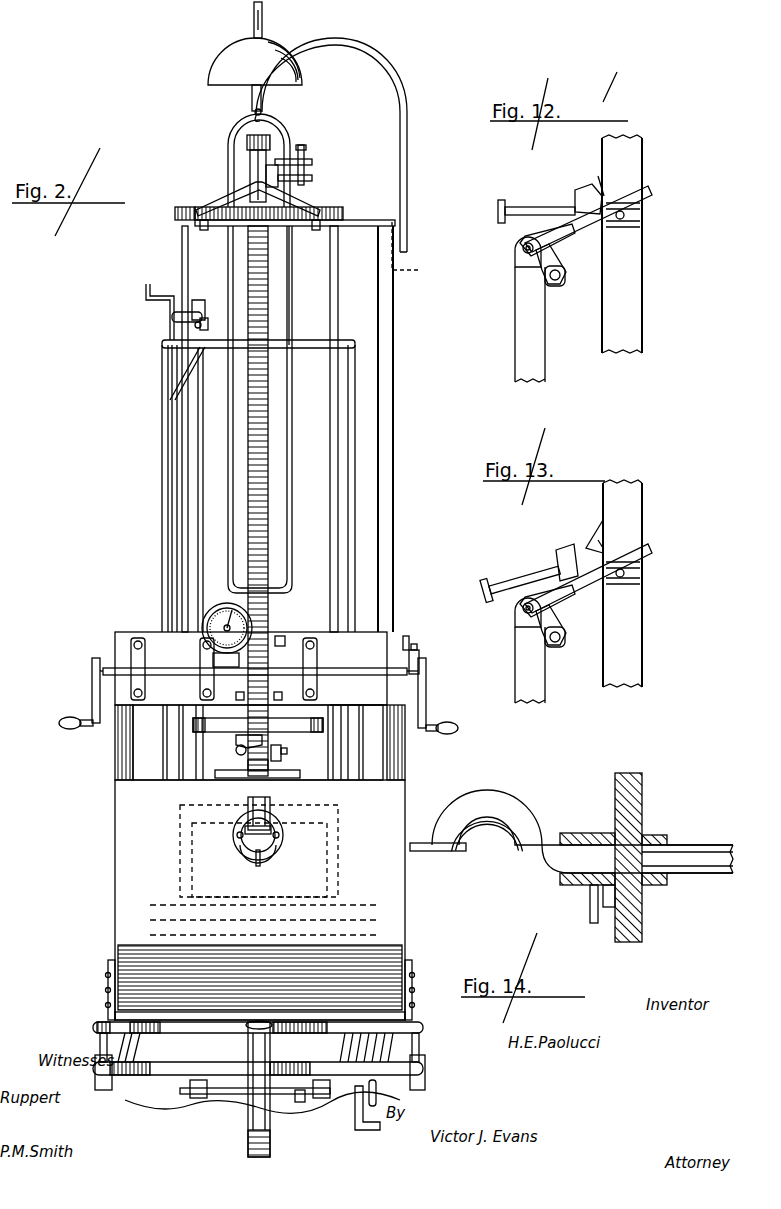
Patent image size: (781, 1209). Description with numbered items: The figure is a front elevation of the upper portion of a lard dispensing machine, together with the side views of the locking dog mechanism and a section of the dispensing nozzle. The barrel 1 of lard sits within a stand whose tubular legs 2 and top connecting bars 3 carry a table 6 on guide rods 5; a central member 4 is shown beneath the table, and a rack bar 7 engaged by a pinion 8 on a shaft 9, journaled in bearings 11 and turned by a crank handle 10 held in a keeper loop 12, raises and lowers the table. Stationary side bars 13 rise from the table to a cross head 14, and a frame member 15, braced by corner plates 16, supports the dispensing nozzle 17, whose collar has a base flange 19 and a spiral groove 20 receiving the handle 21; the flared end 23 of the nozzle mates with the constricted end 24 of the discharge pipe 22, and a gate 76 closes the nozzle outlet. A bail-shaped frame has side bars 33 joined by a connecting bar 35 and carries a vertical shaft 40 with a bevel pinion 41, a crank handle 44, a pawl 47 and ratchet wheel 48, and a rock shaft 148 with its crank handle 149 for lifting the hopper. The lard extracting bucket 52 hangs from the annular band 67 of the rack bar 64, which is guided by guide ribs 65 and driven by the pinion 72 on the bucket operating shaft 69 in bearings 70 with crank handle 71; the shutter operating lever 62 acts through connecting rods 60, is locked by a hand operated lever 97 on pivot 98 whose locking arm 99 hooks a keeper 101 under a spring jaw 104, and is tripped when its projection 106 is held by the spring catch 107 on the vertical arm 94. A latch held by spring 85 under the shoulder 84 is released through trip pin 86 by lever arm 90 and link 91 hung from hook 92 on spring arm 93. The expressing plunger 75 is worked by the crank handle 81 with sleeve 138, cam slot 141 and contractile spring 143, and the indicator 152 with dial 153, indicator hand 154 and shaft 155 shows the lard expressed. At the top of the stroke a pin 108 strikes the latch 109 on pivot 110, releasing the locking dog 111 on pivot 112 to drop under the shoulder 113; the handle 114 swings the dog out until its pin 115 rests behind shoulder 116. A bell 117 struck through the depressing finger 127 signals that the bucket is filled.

In FIG. 2, the barrel 1 is at (140, 1106).
In FIG. 2, the legs 2 is at (425, 1068).
In FIG. 2, the top connecting bars 3 is at (167, 1065).
In FIG. 2, the central column 4 is at (270, 1115).
In FIG. 2, the guide rods 5 is at (100, 1042).
In FIG. 2, the table 6 is at (128, 1016).
In FIG. 2, the rack bar 7 is at (248, 1150).
In FIG. 2, the pinion 8 is at (240, 1096).
In FIG. 2, the shaft 9 is at (300, 1102).
In FIG. 2, the crank handle 10 is at (356, 1112).
In FIG. 14, the crank handle 10 is at (568, 881).
In FIG. 2, the bearings 11 is at (320, 1080).
In FIG. 2, the keeper loop 12 is at (372, 1108).
In FIG. 2, the side bars 13 is at (117, 762).
In FIG. 2, the cross head 14 is at (350, 686).
In FIG. 2, the frame member 15 is at (120, 860).
In FIG. 12, the frame member 15 is at (515, 342).
In FIG. 13, the frame member 15 is at (535, 685).
In FIG. 14, the frame member 15 is at (633, 894).
In FIG. 2, the corner plates 16 is at (412, 976).
In FIG. 2, the dispensing nozzle 17 is at (264, 806).
In FIG. 14, the dispensing nozzle 17 is at (491, 790).
In FIG. 2, the base flange 19 is at (240, 850).
In FIG. 14, the base flange 19 is at (622, 902).
In FIG. 14, the spiral groove 20 is at (570, 833).
In FIG. 2, the handle 21 is at (260, 862).
In FIG. 14, the handle 21 is at (590, 915).
In FIG. 14, the discharge pipe 22 is at (715, 845).
In FIG. 14, the flared end 23 is at (672, 838).
In FIG. 14, the constricted end 24 is at (690, 864).
In FIG. 2, the side bars 33 is at (356, 512).
In FIG. 2, the connecting bar 35 is at (306, 348).
In FIG. 2, the vertical shaft 40 is at (199, 505).
In FIG. 2, the bevel pinion 41 is at (213, 348).
In FIG. 2, the crank handle 44 is at (172, 322).
In FIG. 2, the pawl 47 is at (196, 300).
In FIG. 2, the ratchet wheel 48 is at (206, 318).
In FIG. 2, the lard extracting bucket 52 is at (190, 857).
In FIG. 2, the connecting rods 60 is at (330, 487).
In FIG. 2, the shutter operating lever 62 is at (222, 215).
In FIG. 2, the rack bar 64 is at (270, 432).
In FIG. 12, the rack bar 64 is at (636, 289).
In FIG. 13, the rack bar 64 is at (636, 648).
In FIG. 2, the guide ribs 65 is at (283, 632).
In FIG. 2, the annular band 67 is at (340, 820).
In FIG. 2, the bucket operating shaft 69 is at (173, 668).
In FIG. 2, the bearings 70 is at (318, 666).
In FIG. 2, the crank handle 71 is at (92, 688).
In FIG. 2, the pinion 72 is at (236, 682).
In FIG. 2, the expressing plunger 75 is at (325, 723).
In FIG. 2, the gate 76 is at (244, 824).
In FIG. 14, the gate 76 is at (442, 851).
In FIG. 2, the crank handle 81 is at (427, 700).
In FIG. 2, the shoulder 84 is at (247, 140).
In FIG. 2, the spring 85 is at (204, 200).
In FIG. 2, the trip pin 86 is at (258, 178).
In FIG. 2, the lever arm 90 is at (292, 134).
In FIG. 2, the link 91 is at (291, 285).
In FIG. 2, the hook 92 is at (266, 110).
In FIG. 2, the spring arm 93 is at (397, 60).
In FIG. 2, the vertical arm 94 is at (395, 410).
In FIG. 2, the hand operated lever 97 is at (215, 192).
In FIG. 2, the pivot 98 is at (180, 218).
In FIG. 2, the locking arm 99 is at (305, 154).
In FIG. 2, the keeper 101 is at (313, 179).
In FIG. 2, the spring jaw 104 is at (313, 162).
In FIG. 2, the projection 106 is at (372, 220).
In FIG. 2, the spring catch 107 is at (410, 268).
In FIG. 2, the pin 108 is at (288, 750).
In FIG. 12, the pin 108 is at (626, 218).
In FIG. 13, the pin 108 is at (625, 573).
In FIG. 2, the latch 109 is at (282, 752).
In FIG. 12, the latch 109 is at (652, 189).
In FIG. 13, the latch 109 is at (652, 552).
In FIG. 12, the pivot 110 is at (522, 248).
In FIG. 13, the pivot 110 is at (522, 610).
In FIG. 2, the locking dog 111 is at (255, 770).
In FIG. 12, the locking dog 111 is at (588, 197).
In FIG. 13, the locking dog 111 is at (566, 548).
In FIG. 12, the pivot 112 is at (545, 279).
In FIG. 13, the pivot 112 is at (565, 645).
In FIG. 2, the shoulder 113 is at (236, 738).
In FIG. 12, the shoulder 113 is at (597, 182).
In FIG. 13, the shoulder 113 is at (598, 548).
In FIG. 2, the handle 114 is at (236, 749).
In FIG. 12, the handle 114 is at (520, 206).
In FIG. 13, the handle 114 is at (500, 585).
In FIG. 12, the pin 115 is at (586, 263).
In FIG. 13, the pin 115 is at (560, 606).
In FIG. 12, the shoulder 116 is at (566, 230).
In FIG. 13, the shoulder 116 is at (560, 588).
In FIG. 2, the bell 117 is at (212, 63).
In FIG. 2, the depressing finger 127 is at (263, 14).
In FIG. 2, the sleeve 138 is at (420, 667).
In FIG. 2, the cam slot 141 is at (418, 653).
In FIG. 2, the contractile spring 143 is at (408, 640).
In FIG. 2, the rock shaft 148 is at (172, 458).
In FIG. 2, the crank handle 149 is at (146, 292).
In FIG. 2, the indicator 152 is at (252, 618).
In FIG. 2, the dial 153 is at (212, 620).
In FIG. 2, the indicator hand 154 is at (217, 604).
In FIG. 2, the shaft 155 is at (222, 628).